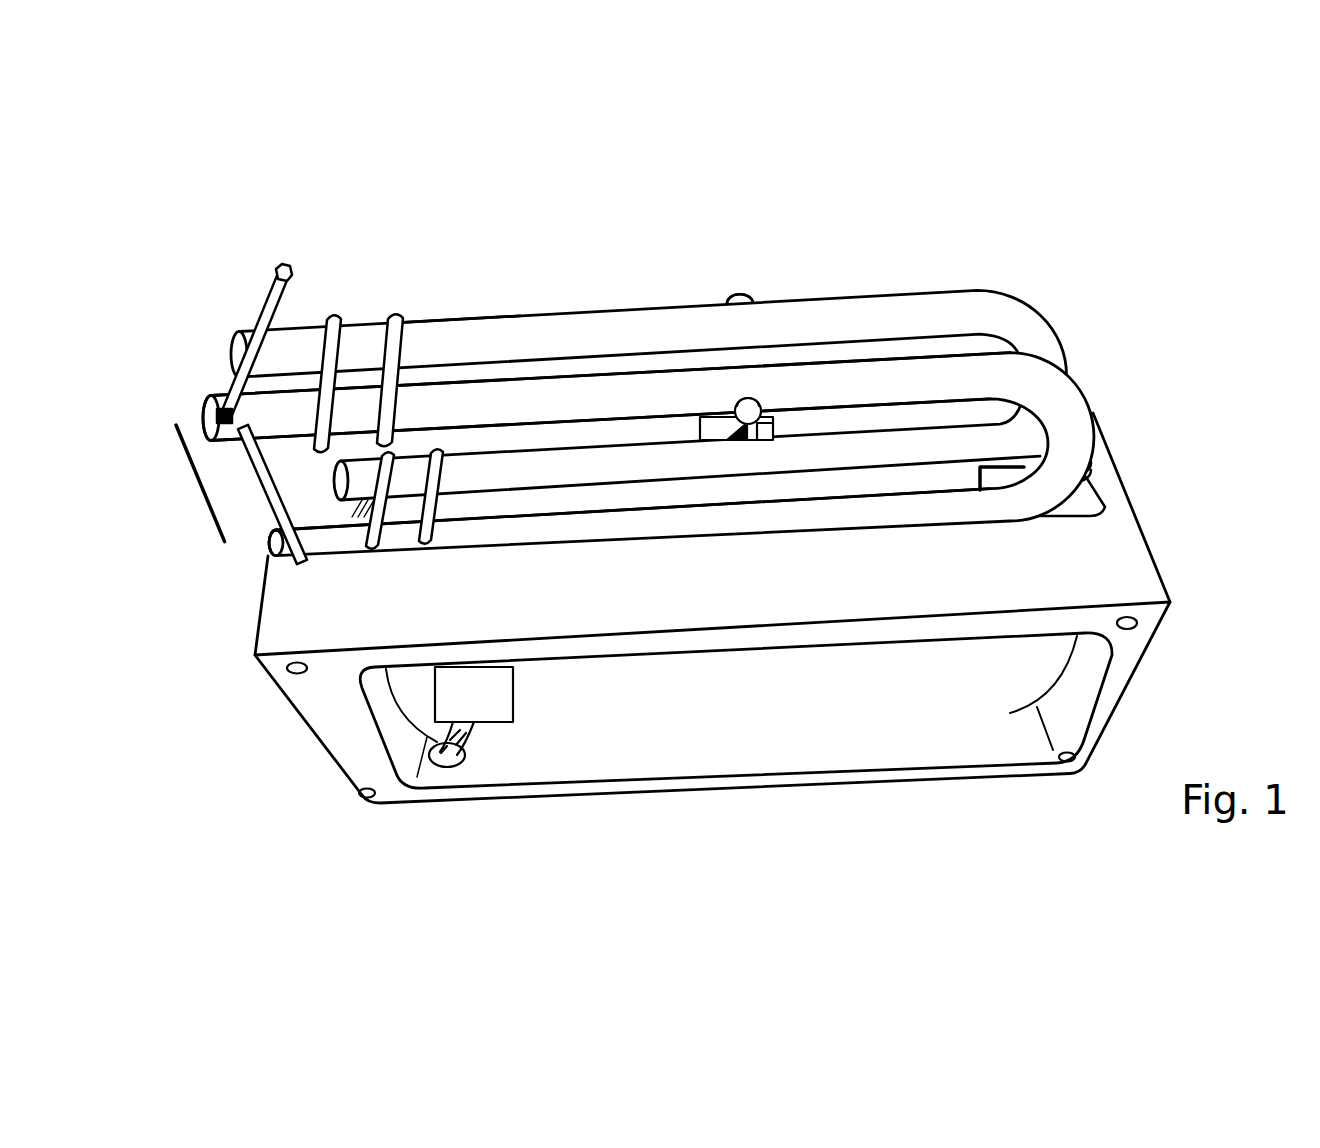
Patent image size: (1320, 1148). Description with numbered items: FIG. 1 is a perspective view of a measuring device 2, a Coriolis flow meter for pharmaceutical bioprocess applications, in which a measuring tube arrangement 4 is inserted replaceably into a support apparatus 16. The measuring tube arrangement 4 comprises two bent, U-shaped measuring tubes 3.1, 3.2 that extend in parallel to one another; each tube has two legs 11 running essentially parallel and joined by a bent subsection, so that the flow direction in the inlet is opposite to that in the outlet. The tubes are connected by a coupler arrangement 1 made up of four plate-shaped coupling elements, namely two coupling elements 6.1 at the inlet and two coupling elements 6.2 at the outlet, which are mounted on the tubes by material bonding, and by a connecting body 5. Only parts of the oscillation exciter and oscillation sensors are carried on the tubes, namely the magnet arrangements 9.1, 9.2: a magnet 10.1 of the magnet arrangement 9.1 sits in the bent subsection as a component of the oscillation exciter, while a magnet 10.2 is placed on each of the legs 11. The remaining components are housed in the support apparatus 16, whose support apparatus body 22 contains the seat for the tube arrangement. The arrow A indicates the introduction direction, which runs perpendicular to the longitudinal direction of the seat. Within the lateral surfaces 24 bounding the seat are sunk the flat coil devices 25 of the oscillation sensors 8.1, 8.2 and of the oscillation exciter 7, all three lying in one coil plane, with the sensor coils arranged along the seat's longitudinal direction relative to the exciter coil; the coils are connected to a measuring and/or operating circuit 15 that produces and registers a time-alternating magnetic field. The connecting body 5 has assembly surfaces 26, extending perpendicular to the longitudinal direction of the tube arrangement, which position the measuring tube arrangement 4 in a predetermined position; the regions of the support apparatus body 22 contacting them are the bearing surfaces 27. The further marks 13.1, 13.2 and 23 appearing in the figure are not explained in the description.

The coupler arrangement 1 is at (644, 499).
The measuring device 2 is at (612, 475).
The measuring tube 3.1 is at (649, 342).
The measuring tube 3.2 is at (648, 496).
The measuring tube arrangement 4 is at (439, 320).
The connecting body 5 is at (224, 381).
The coupling element 6.1 is at (336, 375).
The coupling element 6.2 is at (377, 503).
The oscillation exciter 7 is at (992, 477).
The oscillation sensor 8.1 is at (747, 417).
The oscillation sensor 8.2 is at (745, 424).
The magnet arrangement 9.1 is at (696, 275).
The magnet arrangement 9.2 is at (734, 542).
The magnet 10.1 is at (1095, 541).
The magnet 10.2 is at (738, 297).
The leg 11 is at (606, 475).
The first tube leg 13.1 is at (629, 349).
The second tube leg 13.2 is at (626, 416).
The measuring and/or operating circuit 15 is at (471, 717).
The support apparatus 16 is at (676, 677).
The support apparatus body 22 is at (676, 573).
The mounting hole 23 is at (1084, 462).
The lateral surface 24 is at (859, 478).
The coil device 25 is at (984, 480).
The assembly surface 26 is at (226, 402).
The bearing surface 27 is at (260, 623).
The introduction direction A is at (195, 473).